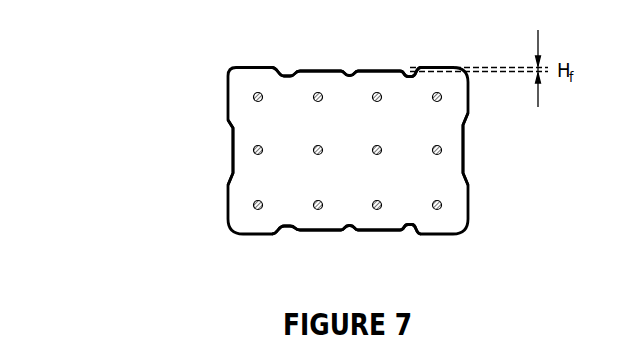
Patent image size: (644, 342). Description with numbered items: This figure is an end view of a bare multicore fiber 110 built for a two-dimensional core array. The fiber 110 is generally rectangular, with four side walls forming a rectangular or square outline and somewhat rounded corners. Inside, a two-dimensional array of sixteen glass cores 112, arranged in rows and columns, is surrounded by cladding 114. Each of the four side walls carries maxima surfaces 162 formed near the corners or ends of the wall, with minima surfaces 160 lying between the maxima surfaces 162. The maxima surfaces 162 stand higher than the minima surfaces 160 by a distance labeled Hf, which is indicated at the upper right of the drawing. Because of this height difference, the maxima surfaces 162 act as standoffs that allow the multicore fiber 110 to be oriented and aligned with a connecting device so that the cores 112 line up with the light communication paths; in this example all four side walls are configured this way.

The multicore fiber 110 is at (122, 61).
The glass cores 112 is at (443, 202).
The cladding 114 is at (255, 122).
The minima surfaces 160 is at (383, 70).
The maxima surfaces 162 is at (260, 65).